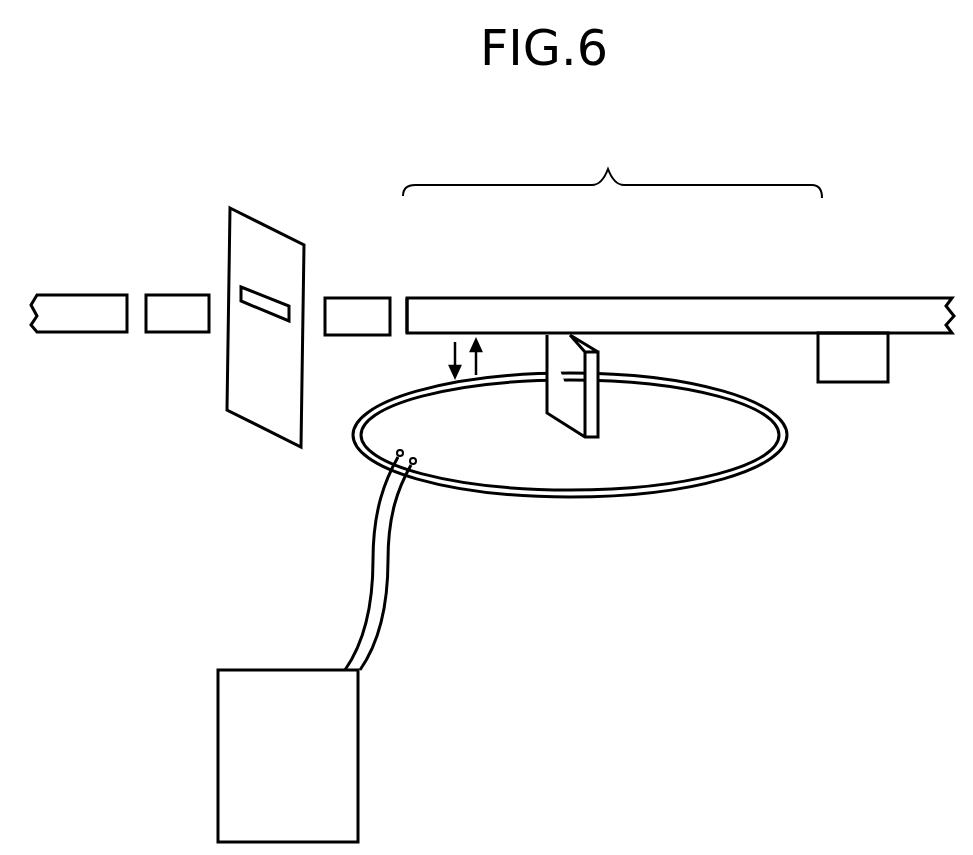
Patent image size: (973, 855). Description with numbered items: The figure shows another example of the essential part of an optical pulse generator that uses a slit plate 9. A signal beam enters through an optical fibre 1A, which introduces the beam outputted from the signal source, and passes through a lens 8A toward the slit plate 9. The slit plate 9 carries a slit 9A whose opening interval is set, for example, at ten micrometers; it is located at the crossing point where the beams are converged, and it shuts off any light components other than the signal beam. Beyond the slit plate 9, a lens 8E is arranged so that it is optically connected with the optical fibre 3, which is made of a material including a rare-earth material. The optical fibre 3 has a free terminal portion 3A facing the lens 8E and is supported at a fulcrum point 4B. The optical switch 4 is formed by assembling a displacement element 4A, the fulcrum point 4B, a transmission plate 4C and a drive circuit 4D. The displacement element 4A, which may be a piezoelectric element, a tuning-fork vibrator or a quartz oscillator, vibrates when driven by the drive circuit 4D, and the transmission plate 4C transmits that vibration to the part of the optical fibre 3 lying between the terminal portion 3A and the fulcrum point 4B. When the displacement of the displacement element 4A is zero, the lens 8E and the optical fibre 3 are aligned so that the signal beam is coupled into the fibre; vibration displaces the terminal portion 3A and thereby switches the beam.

The optical fibre 1A is at (75, 295).
The lens 8A is at (188, 295).
The lens 8E is at (353, 298).
The slit plate 9 is at (277, 228).
The slit 9A is at (267, 308).
The optical fibre 3 is at (900, 298).
The terminal portion 3A is at (430, 298).
The optical switch 4 is at (612, 165).
The displacement element 4A is at (678, 452).
The fulcrum point 4B is at (863, 382).
The transmission plate 4C is at (571, 418).
The drive circuit 4D is at (360, 768).